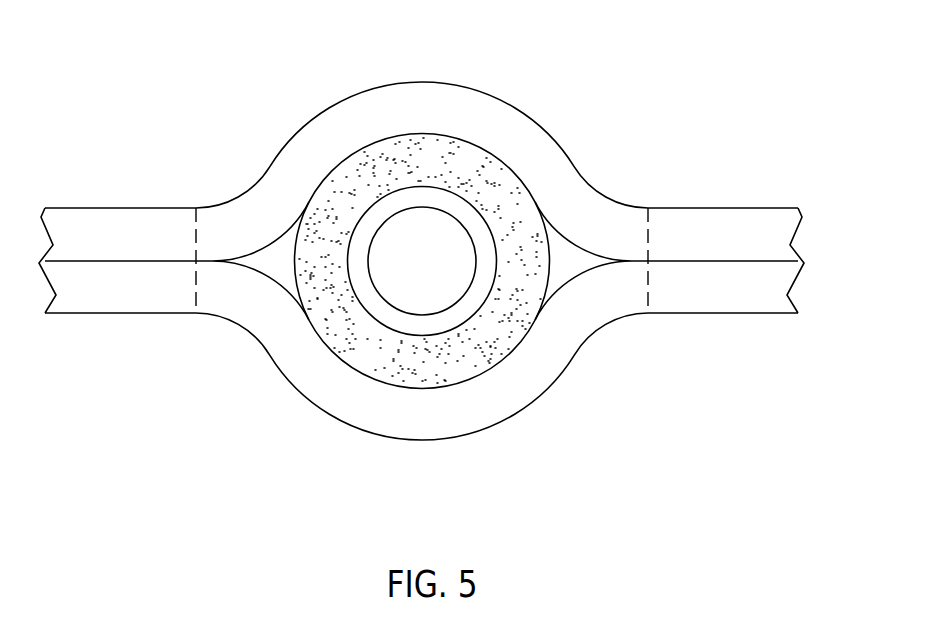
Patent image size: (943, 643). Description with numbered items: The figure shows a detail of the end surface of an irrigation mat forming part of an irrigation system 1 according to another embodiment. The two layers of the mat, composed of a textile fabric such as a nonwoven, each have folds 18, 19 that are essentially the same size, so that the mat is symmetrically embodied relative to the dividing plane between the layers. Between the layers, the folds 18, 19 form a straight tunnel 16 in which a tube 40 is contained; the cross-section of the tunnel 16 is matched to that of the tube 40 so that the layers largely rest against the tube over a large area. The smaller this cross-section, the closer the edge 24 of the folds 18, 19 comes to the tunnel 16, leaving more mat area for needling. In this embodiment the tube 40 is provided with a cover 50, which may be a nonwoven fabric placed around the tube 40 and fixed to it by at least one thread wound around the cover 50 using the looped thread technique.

The irrigation system 1 is at (421, 249).
The tunnel 16 is at (276, 258).
The fold 18 is at (422, 441).
The fold 19 is at (423, 81).
The edge of the folds 24 is at (193, 207).
The tube 40 is at (475, 293).
The cover 50 is at (362, 352).